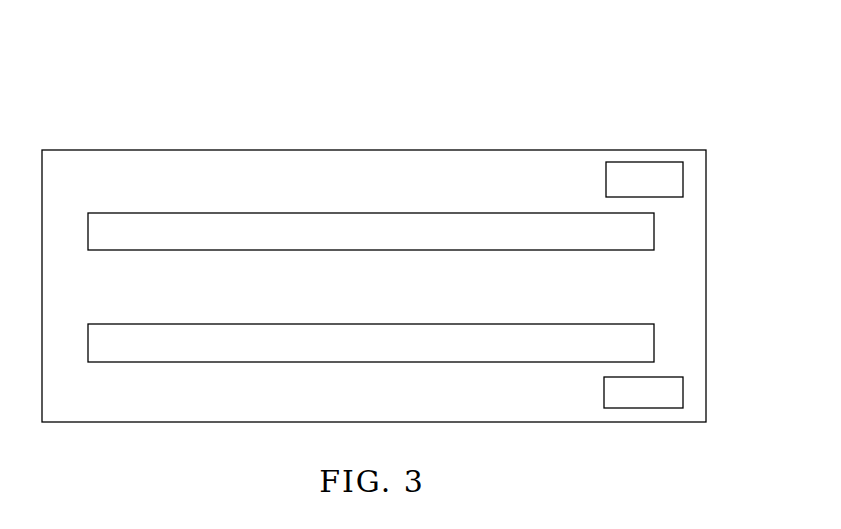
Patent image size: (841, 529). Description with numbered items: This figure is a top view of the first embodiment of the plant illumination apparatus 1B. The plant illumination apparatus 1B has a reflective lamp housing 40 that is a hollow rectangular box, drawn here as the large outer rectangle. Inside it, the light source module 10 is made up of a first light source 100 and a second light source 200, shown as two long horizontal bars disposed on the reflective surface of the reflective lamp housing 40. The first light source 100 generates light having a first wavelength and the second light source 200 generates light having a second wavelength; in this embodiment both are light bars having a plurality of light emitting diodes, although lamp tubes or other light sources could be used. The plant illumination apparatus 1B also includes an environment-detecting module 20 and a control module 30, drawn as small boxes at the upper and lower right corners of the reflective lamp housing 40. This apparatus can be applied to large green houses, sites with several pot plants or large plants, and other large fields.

The plant illumination apparatus 1B is at (121, 101).
The light source module 10 is at (371, 287).
The first light source 100 is at (170, 243).
The second light source 200 is at (170, 355).
The environment-detecting module 20 is at (632, 190).
The control module 30 is at (632, 403).
The reflective lamp housing 40 is at (408, 185).